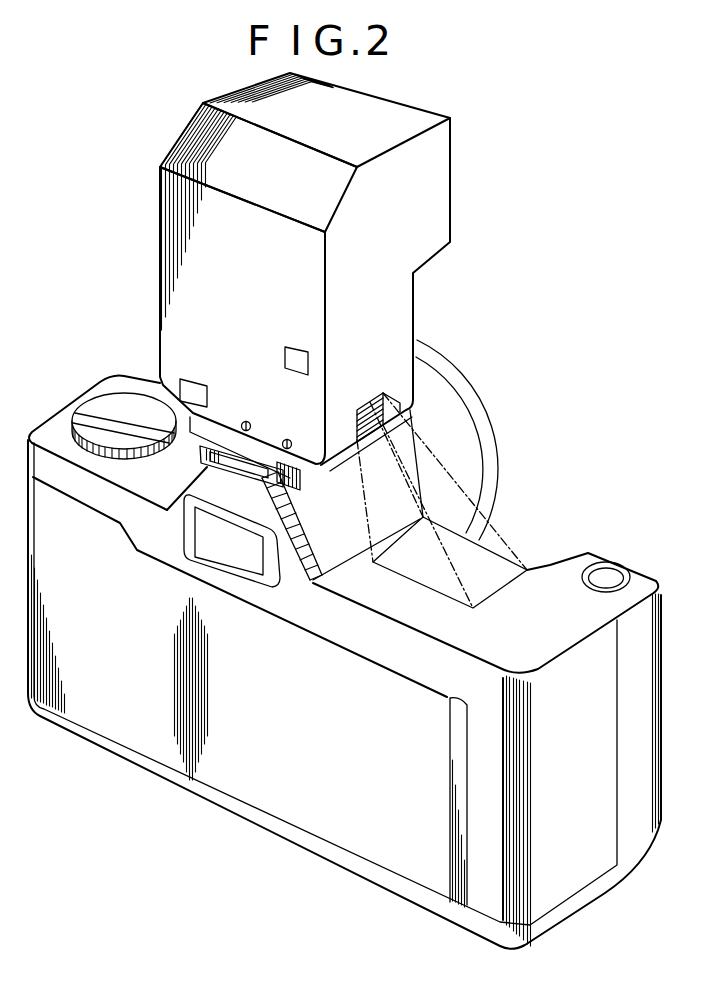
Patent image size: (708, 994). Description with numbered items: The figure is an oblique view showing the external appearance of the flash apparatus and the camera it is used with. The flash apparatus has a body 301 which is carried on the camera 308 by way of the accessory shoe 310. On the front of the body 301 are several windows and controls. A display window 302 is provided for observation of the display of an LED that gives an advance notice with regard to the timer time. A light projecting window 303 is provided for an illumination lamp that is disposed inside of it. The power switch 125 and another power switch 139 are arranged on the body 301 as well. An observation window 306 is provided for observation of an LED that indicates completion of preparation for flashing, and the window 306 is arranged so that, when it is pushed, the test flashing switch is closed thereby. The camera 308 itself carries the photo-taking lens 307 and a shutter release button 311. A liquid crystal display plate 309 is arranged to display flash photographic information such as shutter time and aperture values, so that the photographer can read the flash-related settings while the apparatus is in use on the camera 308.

The body 301 is at (433, 198).
The display window 302 is at (308, 360).
The light projecting window 303 is at (412, 400).
The observation window 306 is at (182, 392).
The photo-taking lens 307 is at (457, 425).
The camera 308 is at (320, 625).
The liquid crystal display plate 309 is at (478, 545).
The accessory shoe 310 is at (207, 468).
The shutter release button 311 is at (607, 573).
The power switch 139 is at (246, 421).
The power switch 125 is at (292, 446).